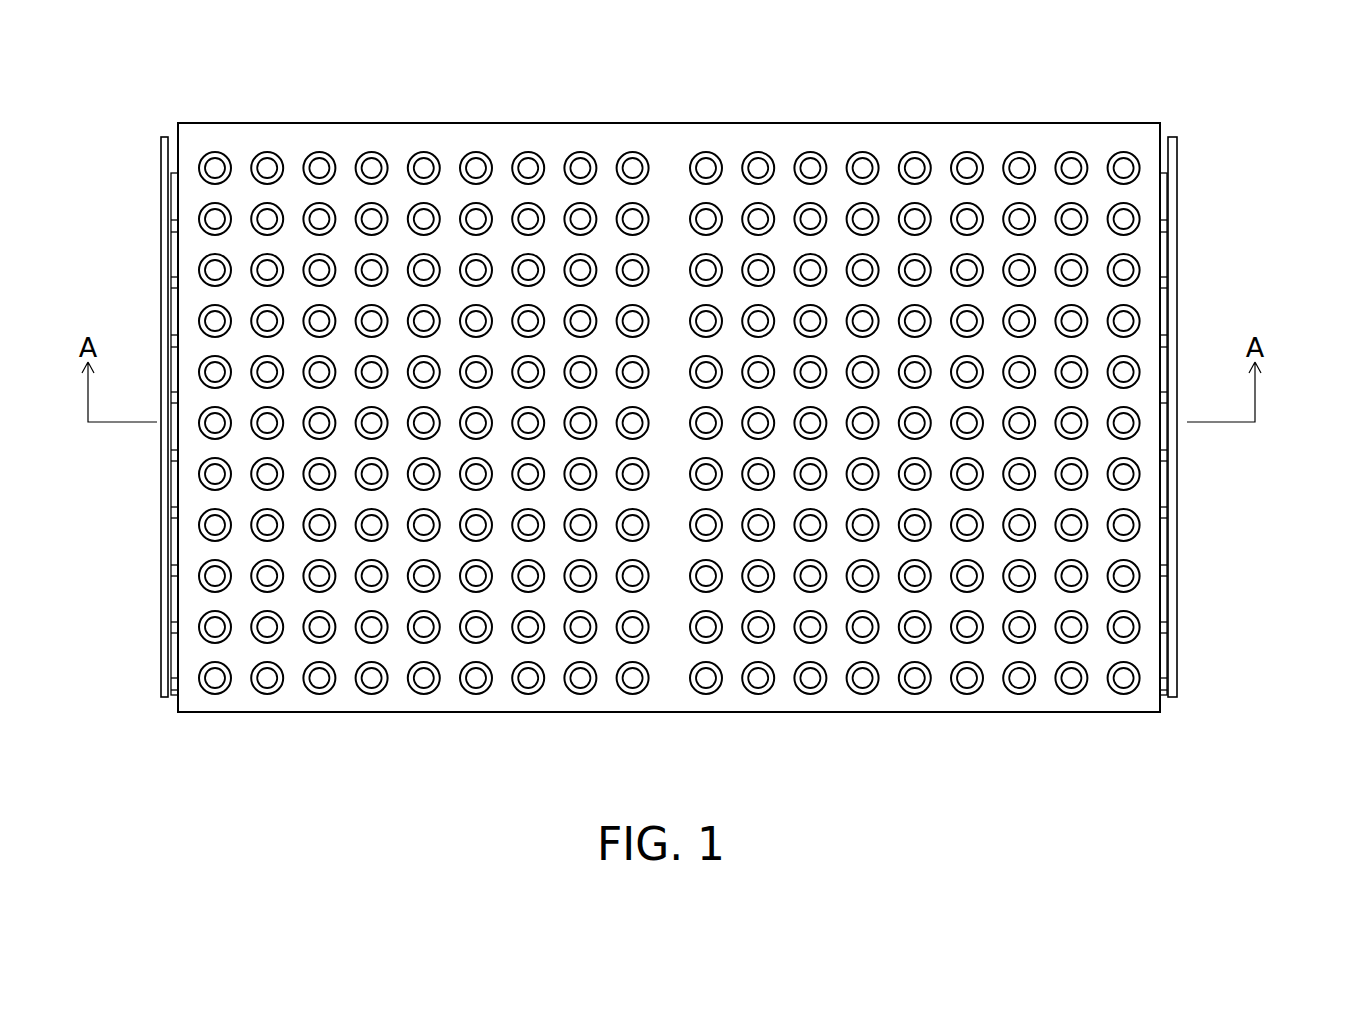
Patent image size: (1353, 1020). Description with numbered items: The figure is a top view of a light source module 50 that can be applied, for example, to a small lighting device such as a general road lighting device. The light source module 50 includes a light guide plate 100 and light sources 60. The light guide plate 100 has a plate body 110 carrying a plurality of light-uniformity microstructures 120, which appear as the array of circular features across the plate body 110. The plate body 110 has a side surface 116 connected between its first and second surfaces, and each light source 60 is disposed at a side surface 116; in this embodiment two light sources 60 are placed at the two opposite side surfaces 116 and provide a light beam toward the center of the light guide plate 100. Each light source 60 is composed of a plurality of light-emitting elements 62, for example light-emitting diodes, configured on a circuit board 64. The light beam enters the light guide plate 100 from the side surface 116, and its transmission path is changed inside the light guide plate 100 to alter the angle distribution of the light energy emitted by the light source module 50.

The light guide plate 100 is at (678, 394).
The plate body 110 is at (235, 145).
The light-uniformity microstructures 120 is at (270, 152).
The side surface 116 is at (177, 702).
The light source 60 is at (160, 182).
The light-emitting elements 62 is at (1172, 198).
The circuit board 64 is at (1173, 150).
The light source module 50 is at (1270, 735).